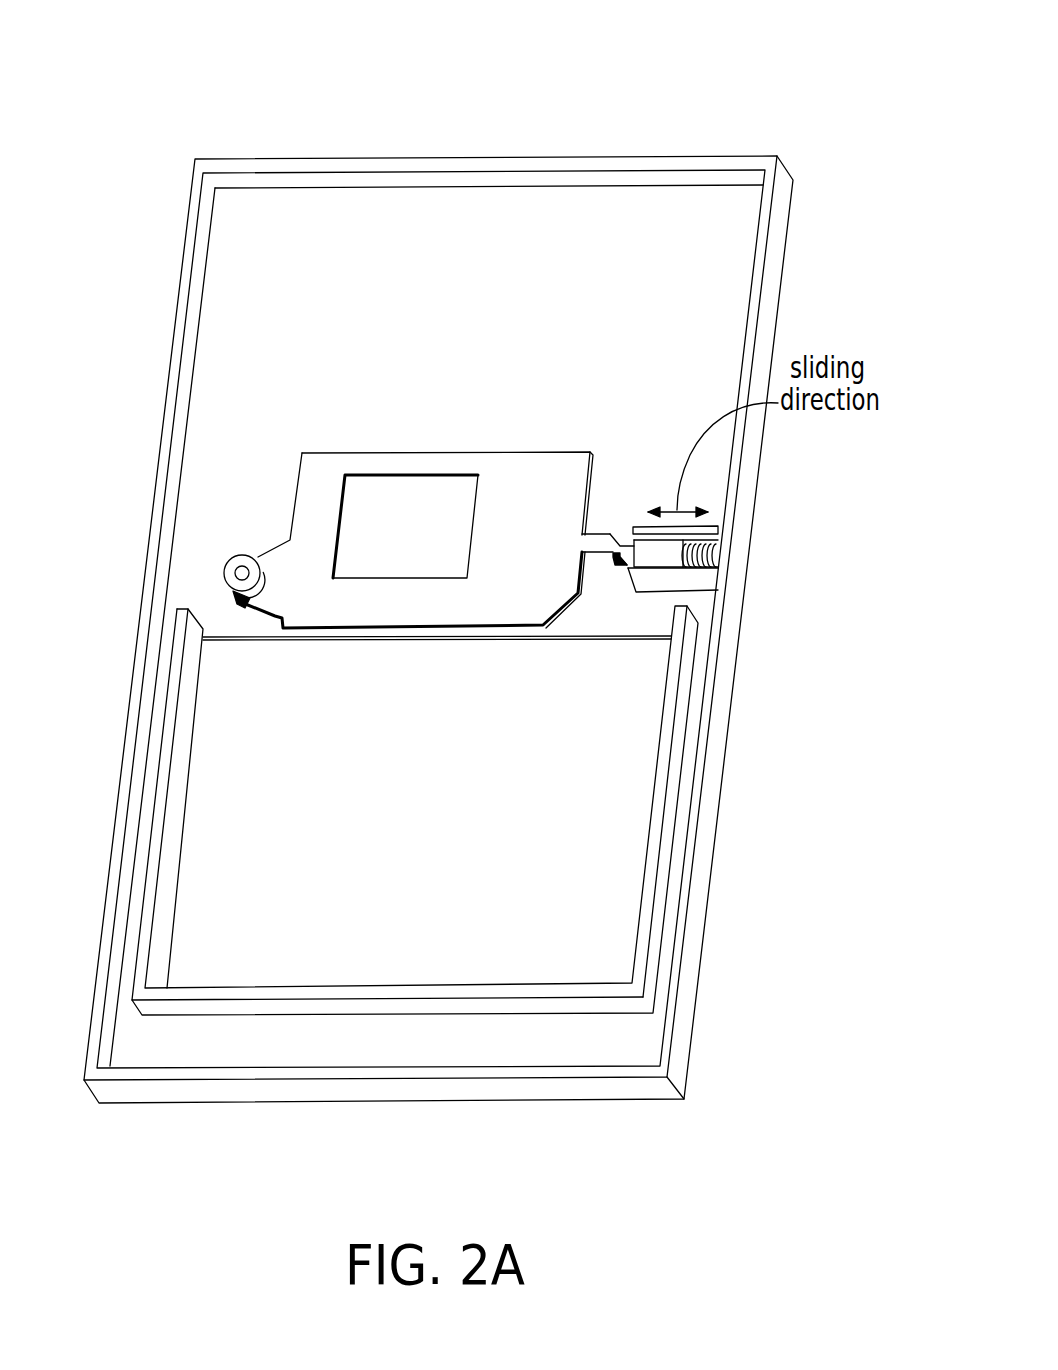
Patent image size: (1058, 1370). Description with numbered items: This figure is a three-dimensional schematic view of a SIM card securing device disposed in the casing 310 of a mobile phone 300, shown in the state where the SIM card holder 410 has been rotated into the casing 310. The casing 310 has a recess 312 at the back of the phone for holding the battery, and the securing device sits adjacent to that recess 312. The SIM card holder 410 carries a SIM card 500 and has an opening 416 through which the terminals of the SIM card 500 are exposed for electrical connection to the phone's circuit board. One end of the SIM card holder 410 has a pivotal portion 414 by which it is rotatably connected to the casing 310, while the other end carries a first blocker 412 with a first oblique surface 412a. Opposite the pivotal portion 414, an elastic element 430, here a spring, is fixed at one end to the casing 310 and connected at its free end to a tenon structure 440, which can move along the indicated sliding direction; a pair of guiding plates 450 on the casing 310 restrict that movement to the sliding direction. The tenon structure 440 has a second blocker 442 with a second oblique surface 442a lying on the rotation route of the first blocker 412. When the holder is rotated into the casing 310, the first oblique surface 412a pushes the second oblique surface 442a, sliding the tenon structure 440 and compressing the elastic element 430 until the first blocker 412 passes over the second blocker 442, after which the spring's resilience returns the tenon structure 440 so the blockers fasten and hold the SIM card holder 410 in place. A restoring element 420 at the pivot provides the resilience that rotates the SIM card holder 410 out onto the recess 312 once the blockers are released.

The mobile phone 300 is at (745, 128).
The casing 310 is at (783, 200).
The recess 312 is at (262, 930).
The SIM card holder 410 is at (349, 480).
The first blocker 412 is at (600, 543).
The first oblique surface 412a is at (617, 539).
The pivotal portion 414 is at (242, 573).
The opening 416 is at (476, 505).
The restoring element 420 is at (228, 588).
The elastic element 430 is at (717, 558).
The tenon structure 440 is at (668, 550).
The second blocker 442 is at (618, 562).
The second oblique surface 442a is at (614, 562).
The guiding plates 450 is at (717, 531).
The SIM card 500 is at (237, 478).